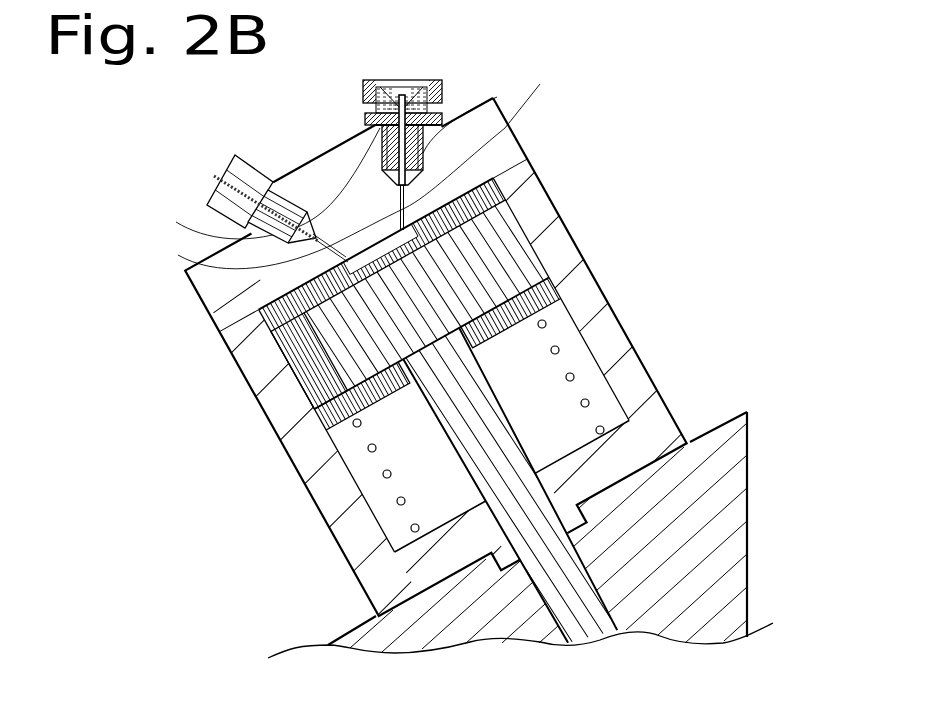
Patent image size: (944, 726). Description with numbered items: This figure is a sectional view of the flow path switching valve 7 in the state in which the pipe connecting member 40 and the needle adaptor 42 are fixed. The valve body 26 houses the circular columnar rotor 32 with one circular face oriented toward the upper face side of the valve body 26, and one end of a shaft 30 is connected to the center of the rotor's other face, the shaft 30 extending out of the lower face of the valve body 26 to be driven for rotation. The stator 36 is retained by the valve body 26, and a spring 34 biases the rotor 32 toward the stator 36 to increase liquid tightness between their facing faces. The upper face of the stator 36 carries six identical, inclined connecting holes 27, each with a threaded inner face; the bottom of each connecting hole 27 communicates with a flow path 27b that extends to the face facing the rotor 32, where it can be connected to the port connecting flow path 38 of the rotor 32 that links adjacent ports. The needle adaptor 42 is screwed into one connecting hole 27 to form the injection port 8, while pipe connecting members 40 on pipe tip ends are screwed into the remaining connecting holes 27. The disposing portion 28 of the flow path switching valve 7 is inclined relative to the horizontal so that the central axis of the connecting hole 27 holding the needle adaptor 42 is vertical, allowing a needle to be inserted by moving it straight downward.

The flow path switching valve 7 is at (608, 228).
The injection port 8 is at (447, 110).
The valve body 26 is at (650, 410).
The connecting hole 27 is at (497, 97).
The flow path 27b is at (361, 163).
The disposing portion 28 is at (727, 500).
The shaft 30 is at (497, 430).
The rotor 32 is at (467, 213).
The spring 34 is at (560, 349).
The stator 36 is at (515, 152).
The port connecting flow path 38 is at (378, 252).
The pipe connecting member 40 is at (240, 157).
The needle adaptor 42 is at (373, 84).